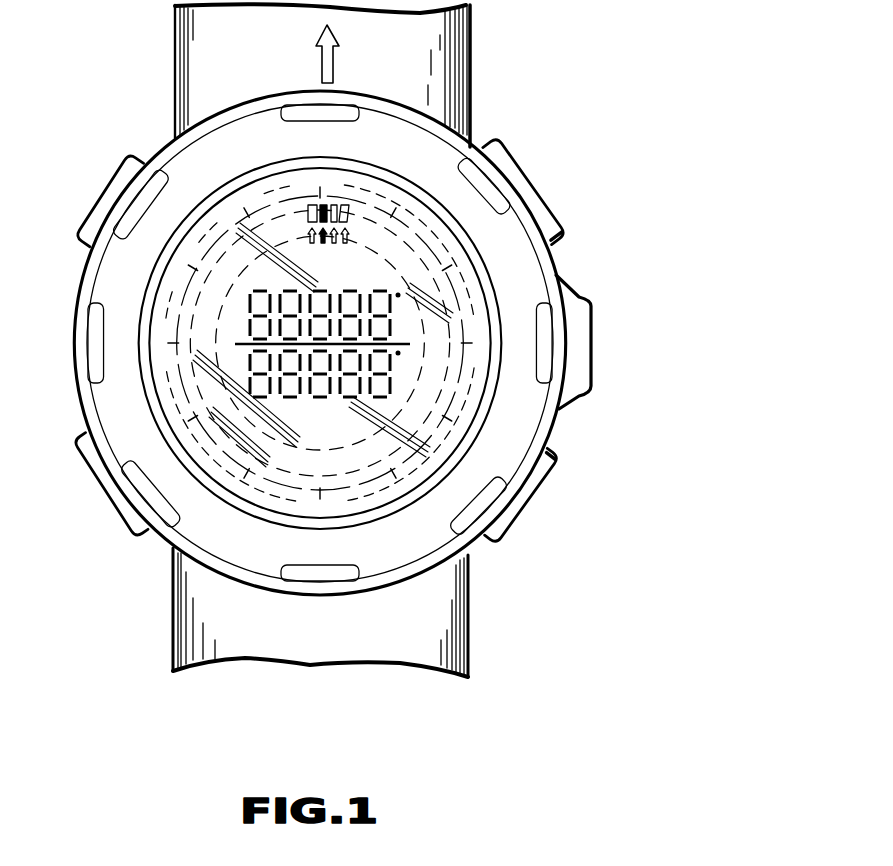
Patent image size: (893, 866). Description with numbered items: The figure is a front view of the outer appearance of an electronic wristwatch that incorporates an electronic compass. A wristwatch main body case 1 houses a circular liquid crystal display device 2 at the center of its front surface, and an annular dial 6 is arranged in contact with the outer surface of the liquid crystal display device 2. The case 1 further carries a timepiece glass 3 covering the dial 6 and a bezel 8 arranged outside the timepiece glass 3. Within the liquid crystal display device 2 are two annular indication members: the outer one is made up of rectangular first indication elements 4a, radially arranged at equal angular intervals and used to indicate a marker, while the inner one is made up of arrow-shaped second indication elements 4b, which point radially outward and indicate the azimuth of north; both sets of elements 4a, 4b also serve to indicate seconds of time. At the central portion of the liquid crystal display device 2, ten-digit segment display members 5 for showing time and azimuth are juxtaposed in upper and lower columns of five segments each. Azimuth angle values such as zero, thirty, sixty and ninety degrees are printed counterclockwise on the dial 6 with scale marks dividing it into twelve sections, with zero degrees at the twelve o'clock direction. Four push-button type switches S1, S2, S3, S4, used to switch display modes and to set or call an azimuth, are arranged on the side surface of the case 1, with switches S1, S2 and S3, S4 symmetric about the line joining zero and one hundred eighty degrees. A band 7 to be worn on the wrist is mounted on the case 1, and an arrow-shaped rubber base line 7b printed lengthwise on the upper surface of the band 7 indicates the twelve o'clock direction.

The wristwatch main body case 1 is at (594, 349).
The liquid crystal display device 2 is at (412, 264).
The timepiece glass 3 is at (420, 472).
The first indication elements 4a is at (320, 204).
The second indication elements 4b is at (322, 246).
The segment display members 5 is at (249, 389).
The dial 6 is at (478, 293).
The band 7 is at (471, 77).
The arrow-shaped rubber line (base line) 7b is at (333, 60).
The bezel 8 is at (410, 550).
The push-button type switch S1 is at (523, 162).
The push-button type switch S2 is at (545, 497).
The push-button type switch S3 is at (103, 190).
The push-button type switch S4 is at (108, 518).